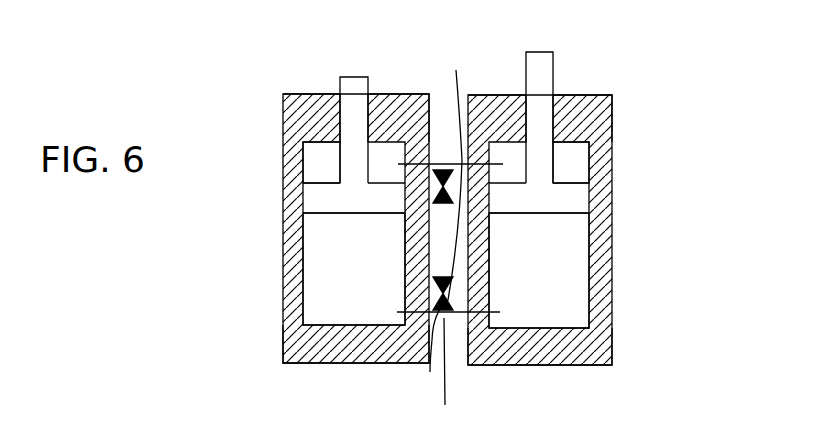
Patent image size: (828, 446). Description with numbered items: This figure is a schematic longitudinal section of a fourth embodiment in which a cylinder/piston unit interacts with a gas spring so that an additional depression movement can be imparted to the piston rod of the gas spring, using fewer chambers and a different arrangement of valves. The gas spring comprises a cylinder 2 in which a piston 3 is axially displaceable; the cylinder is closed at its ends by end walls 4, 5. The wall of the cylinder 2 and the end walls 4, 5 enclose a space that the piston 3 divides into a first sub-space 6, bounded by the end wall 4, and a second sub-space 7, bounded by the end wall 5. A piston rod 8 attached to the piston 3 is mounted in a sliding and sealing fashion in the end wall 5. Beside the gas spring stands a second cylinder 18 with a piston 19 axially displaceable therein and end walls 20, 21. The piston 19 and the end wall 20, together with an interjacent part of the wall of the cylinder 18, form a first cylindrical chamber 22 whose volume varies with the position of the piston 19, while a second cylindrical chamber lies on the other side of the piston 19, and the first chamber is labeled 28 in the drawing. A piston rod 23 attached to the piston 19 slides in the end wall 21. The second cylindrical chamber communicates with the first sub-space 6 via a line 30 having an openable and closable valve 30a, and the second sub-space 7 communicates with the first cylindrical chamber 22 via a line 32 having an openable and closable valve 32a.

The cylinder 2 is at (603, 165).
The piston 3 is at (575, 205).
The end wall 4 is at (558, 353).
The end wall 5 is at (592, 110).
The first sub-space 6 is at (563, 258).
The second sub-space 7 is at (575, 170).
The piston rod 8 is at (543, 80).
The second cylinder 18 is at (292, 160).
The piston 19 is at (362, 208).
The end wall 20 is at (357, 352).
The end wall 21 is at (395, 105).
The first cylindrical chamber 22 is at (372, 266).
The piston rod 23 is at (353, 85).
The upper chamber 28 is at (332, 168).
The line 30 is at (447, 213).
The valve 30a is at (444, 168).
The line 32 is at (437, 224).
The valve 32a is at (449, 373).